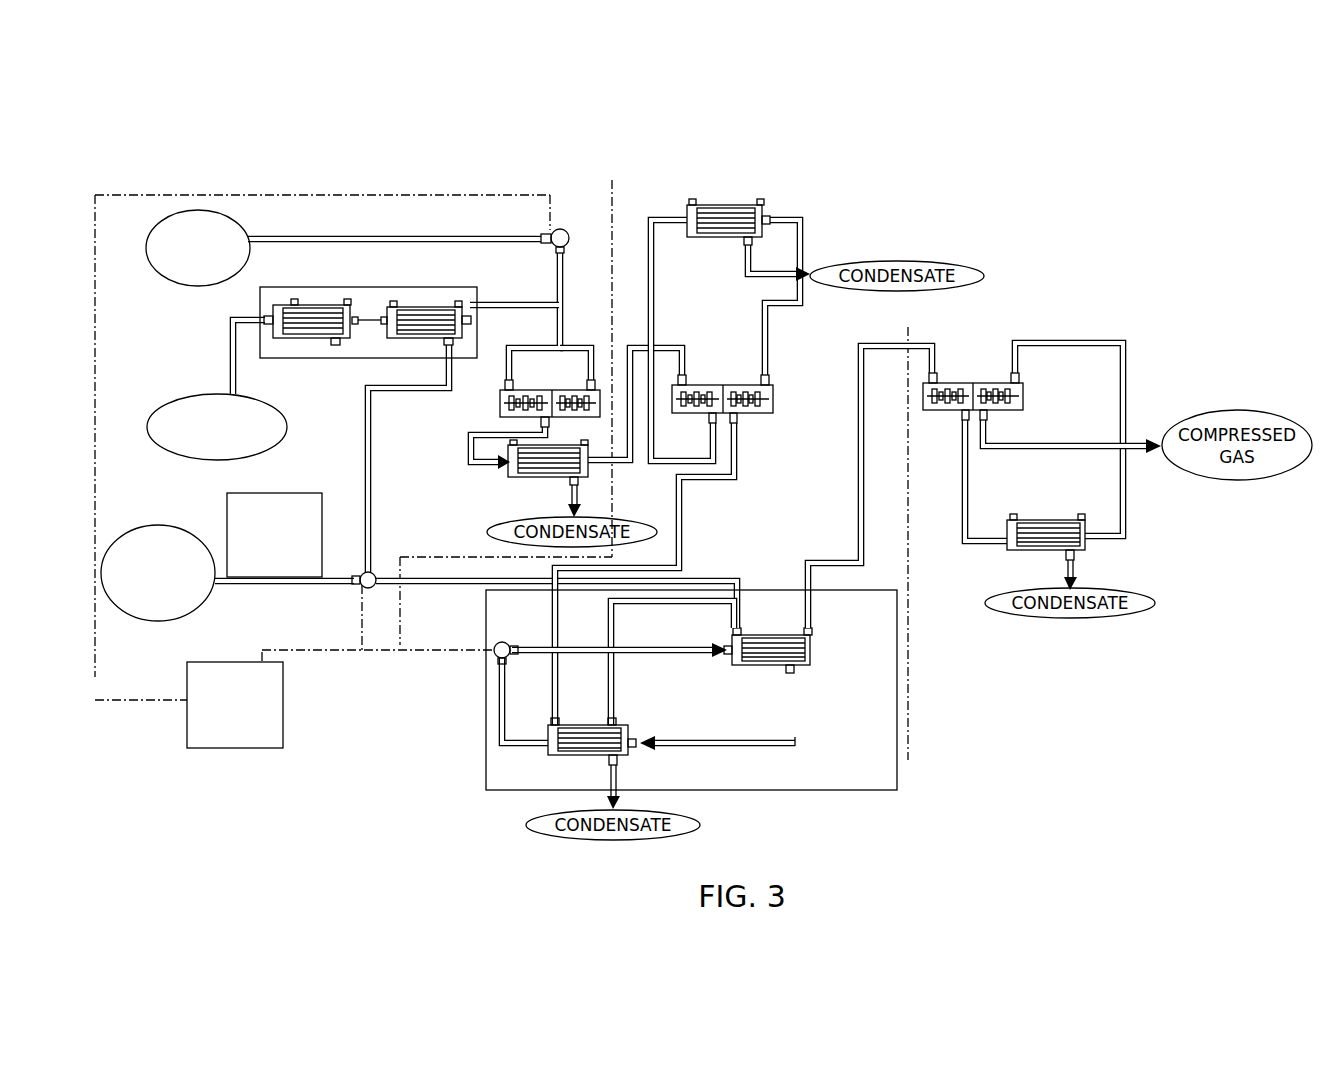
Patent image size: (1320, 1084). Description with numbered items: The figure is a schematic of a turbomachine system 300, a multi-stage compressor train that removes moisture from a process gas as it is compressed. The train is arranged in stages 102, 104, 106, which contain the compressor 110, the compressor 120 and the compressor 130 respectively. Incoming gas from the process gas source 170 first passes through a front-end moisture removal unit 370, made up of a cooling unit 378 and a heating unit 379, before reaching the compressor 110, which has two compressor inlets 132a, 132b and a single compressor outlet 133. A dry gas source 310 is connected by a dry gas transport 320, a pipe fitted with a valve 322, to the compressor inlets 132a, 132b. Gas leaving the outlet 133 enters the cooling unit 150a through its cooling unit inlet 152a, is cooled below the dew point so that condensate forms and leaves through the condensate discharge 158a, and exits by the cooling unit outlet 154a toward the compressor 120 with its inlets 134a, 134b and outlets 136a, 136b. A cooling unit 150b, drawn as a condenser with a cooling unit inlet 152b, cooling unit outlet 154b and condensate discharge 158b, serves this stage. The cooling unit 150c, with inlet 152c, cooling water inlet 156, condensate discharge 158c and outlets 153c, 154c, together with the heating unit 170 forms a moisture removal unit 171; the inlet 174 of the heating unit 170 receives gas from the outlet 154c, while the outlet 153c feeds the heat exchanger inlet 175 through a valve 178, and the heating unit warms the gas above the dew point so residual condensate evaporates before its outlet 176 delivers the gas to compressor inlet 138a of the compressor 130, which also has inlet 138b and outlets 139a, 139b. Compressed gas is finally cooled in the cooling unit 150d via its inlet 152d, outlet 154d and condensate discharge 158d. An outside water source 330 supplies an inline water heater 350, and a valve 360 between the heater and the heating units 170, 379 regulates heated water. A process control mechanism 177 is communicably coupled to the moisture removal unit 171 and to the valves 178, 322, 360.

The stage 102 is at (524, 176).
The stage 104 is at (855, 184).
The stage 106 is at (970, 213).
The turbomachine system 300 is at (1195, 208).
The dry gas source 310 is at (162, 228).
The dry gas transport 320 is at (390, 238).
The valve 322 is at (560, 229).
The moisture removal unit 370 is at (366, 287).
The cooling unit 378 is at (318, 305).
The heating unit 379 is at (430, 307).
The heating unit 170 is at (150, 428).
The outside water source 330 is at (162, 524).
The inline water heater 350 is at (292, 493).
The valve 360 is at (369, 590).
The process control mechanism 177 is at (236, 662).
The valve 178 is at (504, 641).
The compressor 110 is at (500, 398).
The compressor inlet 132a is at (507, 380).
The compressor inlet 132b is at (593, 380).
The compressor outlet 133 is at (550, 426).
The cooling unit 150a is at (540, 445).
The cooling unit inlet 152a is at (504, 461).
The cooling unit outlet 154a is at (596, 464).
The condensate discharge 158a is at (582, 486).
The compressor 120 is at (774, 402).
The compressor inlet 134a is at (684, 375).
The compressor inlet 134b is at (768, 375).
The compressor outlet 136a is at (710, 426).
The compressor outlet 136b is at (738, 426).
The cooling unit 150b is at (758, 204).
The cooling unit inlet 152b is at (686, 214).
The cooling unit outlet 154b is at (770, 218).
The condensate discharge 158b is at (758, 243).
The compressor 130 is at (1024, 396).
The compressor inlet 138a is at (936, 372).
The compressor inlet 138b is at (1019, 372).
The compressor outlet 139a is at (962, 426).
The compressor outlet 139b is at (988, 424).
The cooling unit 150d is at (1045, 520).
The cooling unit inlet 152d is at (1006, 530).
The cooling unit outlet 154d is at (1088, 534).
The condensate discharge 158d is at (1076, 558).
The moisture removal unit 171 is at (898, 757).
The inlet 174 is at (736, 627).
The heat exchanger inlet 175 is at (726, 654).
The outlet 176 is at (812, 630).
The cooling unit 150c is at (585, 725).
The cooling unit inlet 152c is at (550, 726).
The cooling unit outlet 153c is at (548, 752).
The cooling unit outlet 154c is at (618, 726).
The cooling water inlet 156 is at (642, 742).
The condensate discharge 158c is at (619, 762).